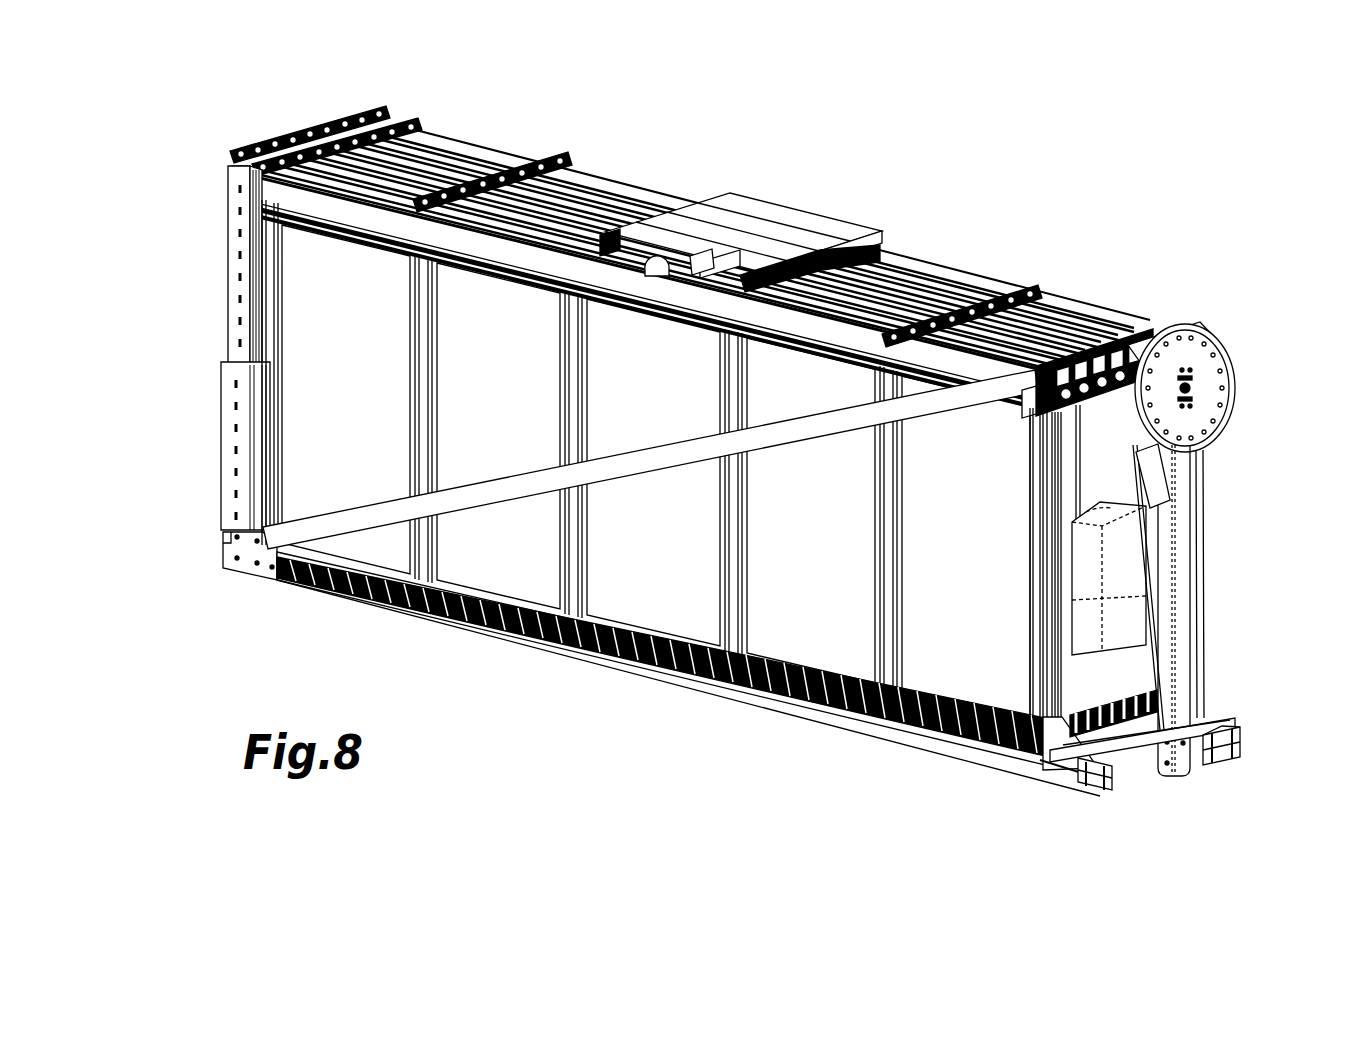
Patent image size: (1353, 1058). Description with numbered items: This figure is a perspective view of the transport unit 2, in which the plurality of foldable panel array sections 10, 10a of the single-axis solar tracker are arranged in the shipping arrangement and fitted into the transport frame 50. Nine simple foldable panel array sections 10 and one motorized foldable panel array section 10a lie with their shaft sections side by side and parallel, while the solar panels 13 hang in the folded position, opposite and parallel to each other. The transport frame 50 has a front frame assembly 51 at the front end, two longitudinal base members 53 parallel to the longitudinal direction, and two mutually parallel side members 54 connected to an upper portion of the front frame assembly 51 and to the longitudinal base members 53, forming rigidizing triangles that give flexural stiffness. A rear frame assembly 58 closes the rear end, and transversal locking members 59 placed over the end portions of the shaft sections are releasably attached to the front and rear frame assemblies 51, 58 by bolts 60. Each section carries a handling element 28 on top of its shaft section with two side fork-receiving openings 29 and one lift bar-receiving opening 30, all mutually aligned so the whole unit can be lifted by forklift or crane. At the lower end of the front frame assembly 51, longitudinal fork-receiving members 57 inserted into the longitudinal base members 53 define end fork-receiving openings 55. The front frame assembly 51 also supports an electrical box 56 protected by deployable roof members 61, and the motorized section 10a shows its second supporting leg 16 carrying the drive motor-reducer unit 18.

The transport unit 2 is at (816, 127).
The simple foldable panel array section 10 is at (410, 190).
The motorized foldable panel array section 10a is at (1042, 332).
The solar panels 13 is at (355, 397).
The second supporting leg 16 is at (1190, 604).
The drive motor-reducer unit 18 is at (1216, 376).
The handling element 28 is at (828, 217).
The side fork-receiving openings 29 is at (644, 257).
The lift bar-receiving opening 30 is at (692, 251).
The transport frame 50 is at (688, 674).
The front frame assembly 51 is at (1050, 579).
The longitudinal base members 53 is at (626, 664).
The side members 54 is at (372, 526).
The end fork-receiving openings 55 is at (1222, 746).
The electrical box 56 is at (1080, 628).
The longitudinal fork-receiving members 57 is at (1236, 740).
The rear frame assembly 58 is at (210, 301).
The locking members 59 is at (336, 156).
The bolts 60 is at (234, 178).
The deployable roof members 61 is at (1075, 497).